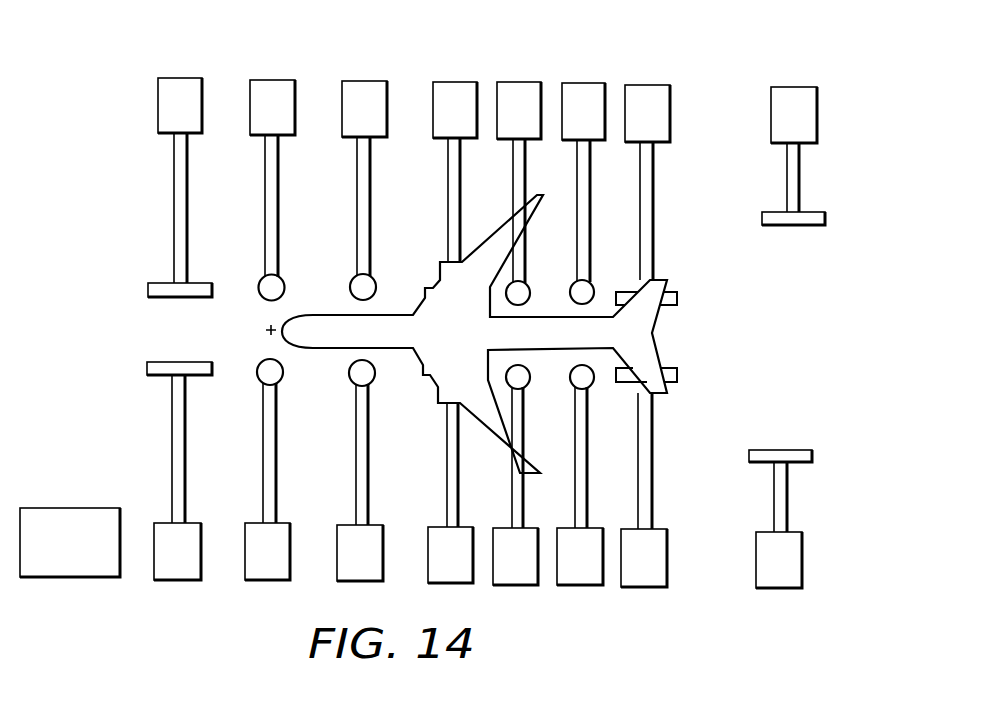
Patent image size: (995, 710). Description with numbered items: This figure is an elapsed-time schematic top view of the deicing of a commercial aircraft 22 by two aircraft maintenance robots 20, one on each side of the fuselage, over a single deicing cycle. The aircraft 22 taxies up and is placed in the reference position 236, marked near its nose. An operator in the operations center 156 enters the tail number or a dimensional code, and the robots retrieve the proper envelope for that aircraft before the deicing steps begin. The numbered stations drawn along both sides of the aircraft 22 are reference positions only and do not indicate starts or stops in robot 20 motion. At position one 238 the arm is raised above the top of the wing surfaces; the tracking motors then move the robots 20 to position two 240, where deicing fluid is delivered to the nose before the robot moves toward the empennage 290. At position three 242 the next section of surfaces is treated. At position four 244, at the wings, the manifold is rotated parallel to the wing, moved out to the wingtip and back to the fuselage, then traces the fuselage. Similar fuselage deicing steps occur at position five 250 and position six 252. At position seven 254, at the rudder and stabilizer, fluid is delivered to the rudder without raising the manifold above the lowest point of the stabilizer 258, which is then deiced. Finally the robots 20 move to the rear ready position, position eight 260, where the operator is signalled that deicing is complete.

The aircraft maintenance robot 20 is at (102, 100).
The commercial aircraft 22 is at (463, 342).
The operations center 156 is at (70, 507).
The reference position 236 is at (258, 331).
The position one 238 is at (170, 77).
The position two 240 is at (268, 79).
The position three 242 is at (363, 80).
The position four 244 is at (460, 81).
The position five 250 is at (525, 81).
The position six 252 is at (589, 82).
The position seven 254 is at (666, 84).
The stabilizer 258 is at (664, 280).
The position eight 260 is at (795, 86).
The empennage 290 is at (656, 336).